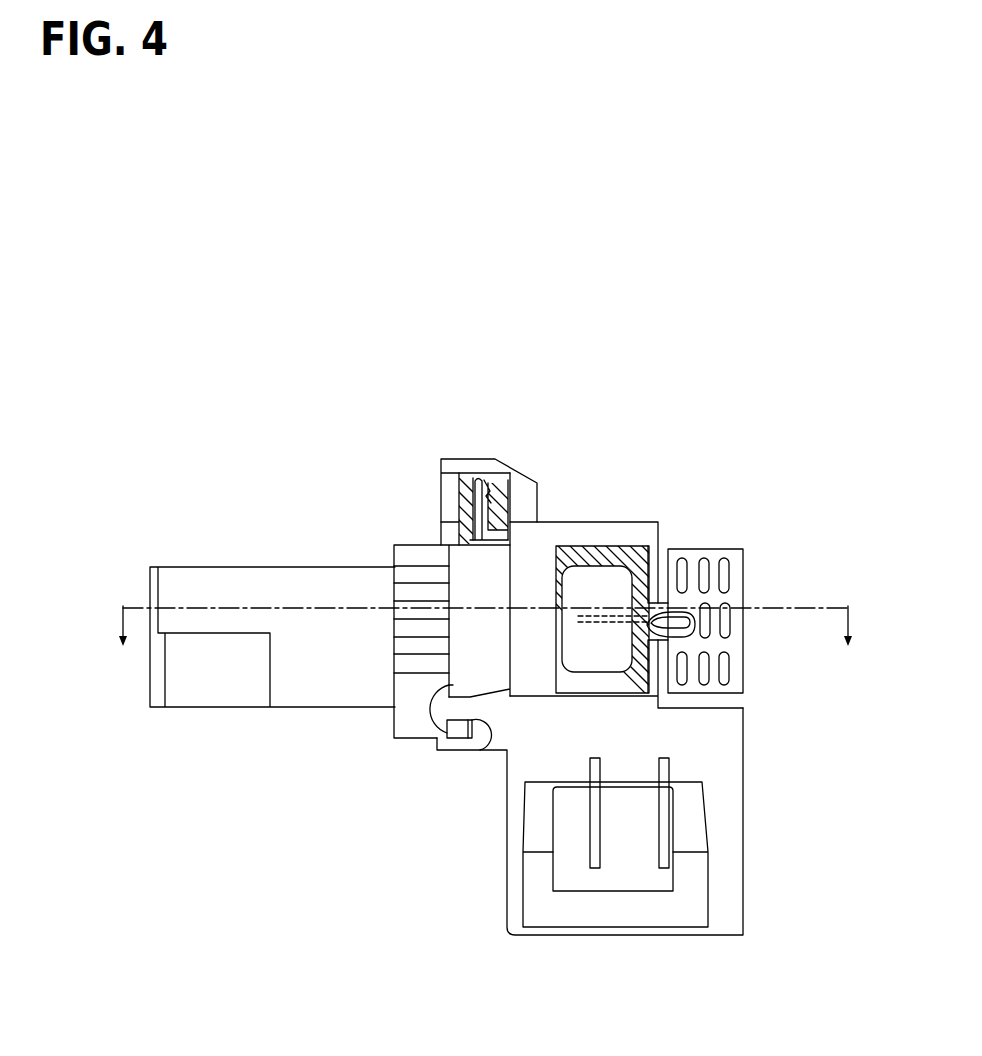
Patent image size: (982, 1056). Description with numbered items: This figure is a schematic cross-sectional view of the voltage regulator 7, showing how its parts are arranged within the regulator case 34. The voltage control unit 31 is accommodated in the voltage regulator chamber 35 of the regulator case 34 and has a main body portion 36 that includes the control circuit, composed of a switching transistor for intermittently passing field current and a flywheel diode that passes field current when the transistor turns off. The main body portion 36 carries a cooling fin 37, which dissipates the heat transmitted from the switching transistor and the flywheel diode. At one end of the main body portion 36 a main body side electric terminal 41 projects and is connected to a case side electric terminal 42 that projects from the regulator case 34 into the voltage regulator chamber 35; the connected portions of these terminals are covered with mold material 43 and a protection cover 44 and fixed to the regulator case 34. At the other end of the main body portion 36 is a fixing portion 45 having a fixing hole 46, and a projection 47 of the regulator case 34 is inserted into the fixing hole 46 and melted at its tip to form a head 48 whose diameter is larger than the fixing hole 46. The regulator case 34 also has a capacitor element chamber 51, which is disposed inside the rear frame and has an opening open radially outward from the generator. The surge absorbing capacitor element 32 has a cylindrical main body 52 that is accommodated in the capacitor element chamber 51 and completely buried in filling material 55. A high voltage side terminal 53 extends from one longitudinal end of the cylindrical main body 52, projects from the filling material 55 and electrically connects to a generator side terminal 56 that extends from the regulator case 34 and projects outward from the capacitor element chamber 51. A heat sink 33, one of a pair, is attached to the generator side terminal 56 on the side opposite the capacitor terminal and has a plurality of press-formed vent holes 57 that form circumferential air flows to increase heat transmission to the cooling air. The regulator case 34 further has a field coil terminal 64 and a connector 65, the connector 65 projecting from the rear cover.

The voltage regulator 7 is at (657, 369).
The voltage control unit 31 is at (443, 596).
The surge absorbing capacitor element 32 is at (560, 690).
The heat sink 33 is at (712, 553).
The regulator case 34 is at (523, 557).
The voltage regulator chamber 35 is at (500, 460).
The main body portion 36 is at (472, 575).
The cooling fin 37 is at (402, 648).
The main body side electric terminal 41 is at (448, 533).
The case side electric terminal 42 is at (488, 478).
The mold material 43 is at (470, 478).
The protection cover 44 is at (448, 488).
The fixing portion 45 is at (483, 740).
The fixing hole 46 is at (457, 732).
The projection 47 is at (453, 714).
The head 48 is at (462, 709).
The capacitor element chamber 51 is at (616, 558).
The cylindrical main body 52 is at (585, 583).
The high voltage side terminal 53 is at (697, 636).
The filling material 55 is at (627, 560).
The generator side terminal 56 is at (672, 633).
The vent hole 57 is at (728, 580).
The field coil terminal 64 is at (208, 633).
The connector 65 is at (632, 852).